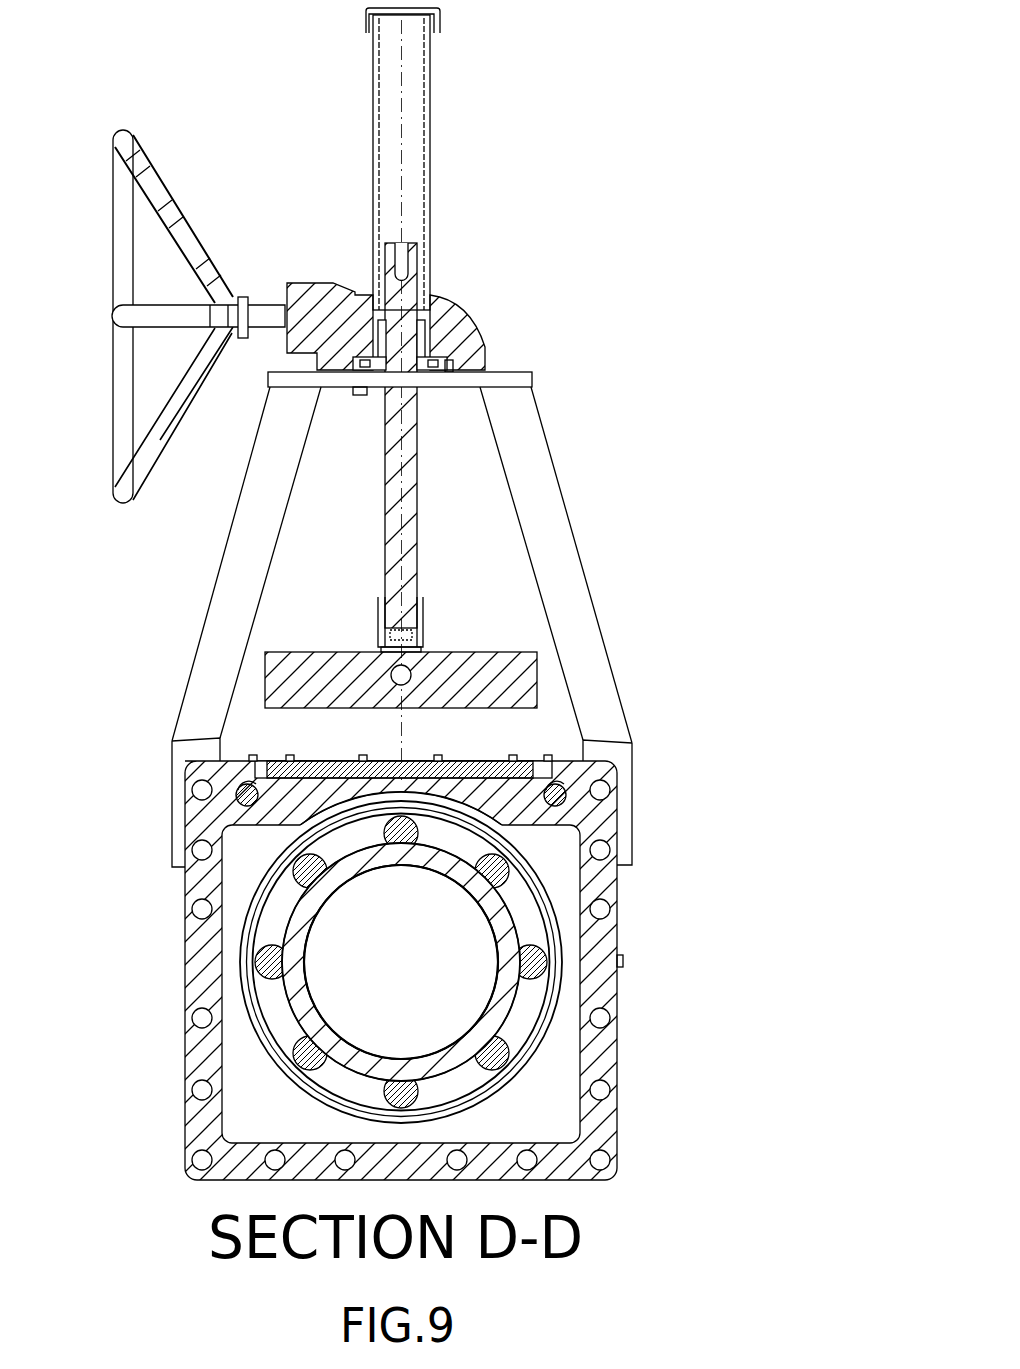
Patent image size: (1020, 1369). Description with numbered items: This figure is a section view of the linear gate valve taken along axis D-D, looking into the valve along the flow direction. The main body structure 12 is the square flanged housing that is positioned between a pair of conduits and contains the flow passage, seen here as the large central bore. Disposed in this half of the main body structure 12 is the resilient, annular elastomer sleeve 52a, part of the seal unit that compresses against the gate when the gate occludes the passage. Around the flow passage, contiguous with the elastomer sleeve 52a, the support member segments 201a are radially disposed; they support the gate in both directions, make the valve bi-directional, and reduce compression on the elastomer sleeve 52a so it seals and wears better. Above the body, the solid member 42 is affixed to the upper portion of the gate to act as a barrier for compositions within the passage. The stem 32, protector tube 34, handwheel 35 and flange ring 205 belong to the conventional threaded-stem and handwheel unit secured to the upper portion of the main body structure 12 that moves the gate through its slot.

The main body structure 12 is at (605, 1135).
The stem 32 is at (407, 610).
The stem protector tube 34 is at (430, 155).
The handwheel 35 is at (170, 193).
The solid member 42 is at (500, 768).
The elastomer sleeve 52a is at (502, 960).
The support member segments 201a is at (506, 874).
The bolted flange ring 205 is at (520, 1010).